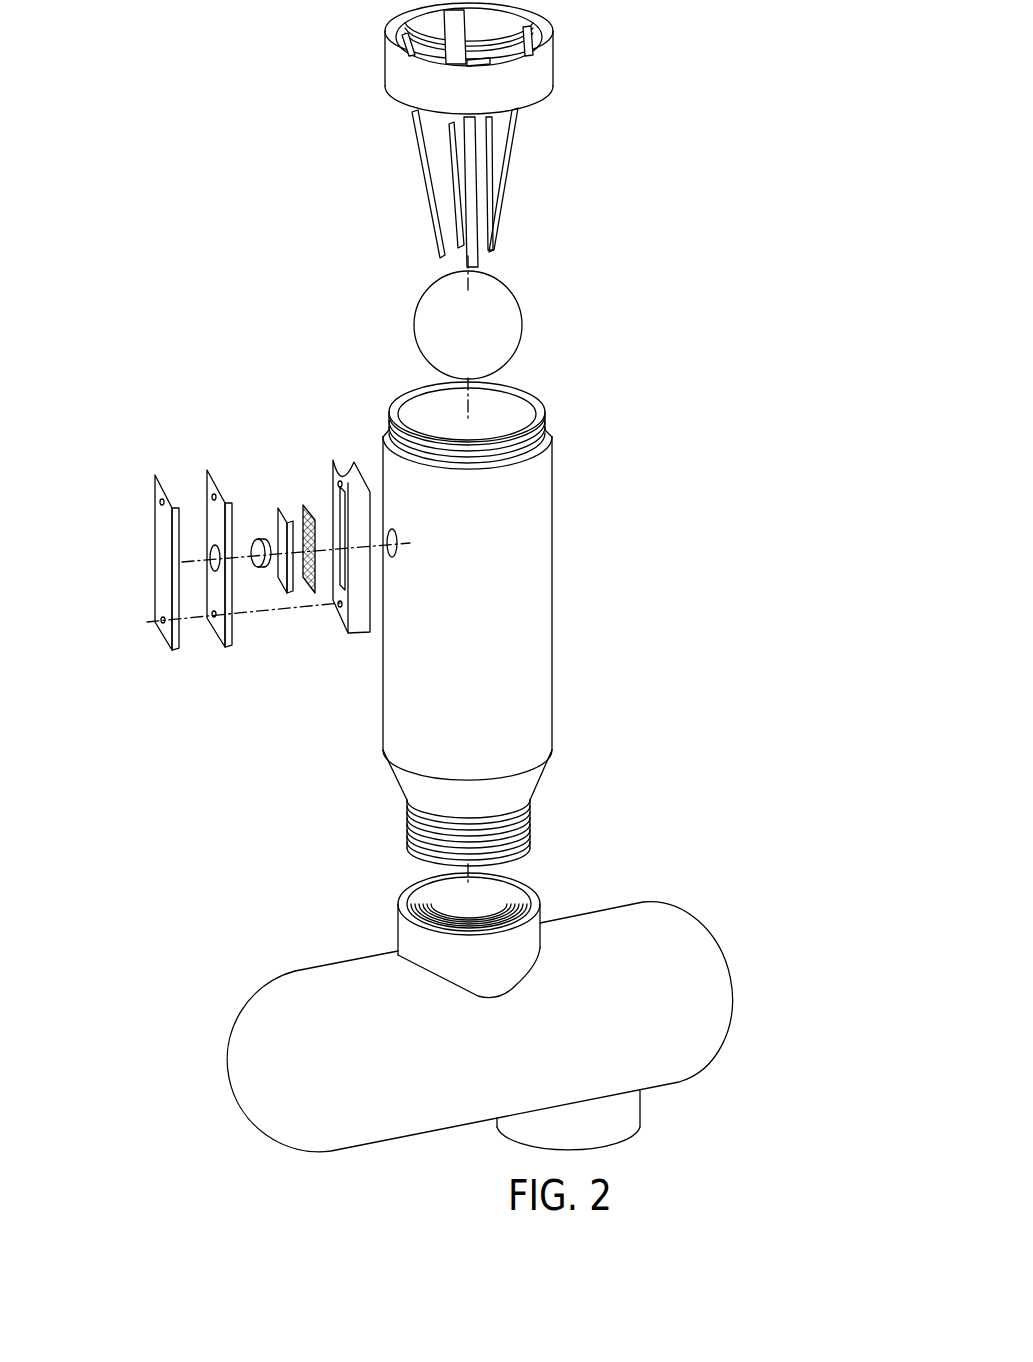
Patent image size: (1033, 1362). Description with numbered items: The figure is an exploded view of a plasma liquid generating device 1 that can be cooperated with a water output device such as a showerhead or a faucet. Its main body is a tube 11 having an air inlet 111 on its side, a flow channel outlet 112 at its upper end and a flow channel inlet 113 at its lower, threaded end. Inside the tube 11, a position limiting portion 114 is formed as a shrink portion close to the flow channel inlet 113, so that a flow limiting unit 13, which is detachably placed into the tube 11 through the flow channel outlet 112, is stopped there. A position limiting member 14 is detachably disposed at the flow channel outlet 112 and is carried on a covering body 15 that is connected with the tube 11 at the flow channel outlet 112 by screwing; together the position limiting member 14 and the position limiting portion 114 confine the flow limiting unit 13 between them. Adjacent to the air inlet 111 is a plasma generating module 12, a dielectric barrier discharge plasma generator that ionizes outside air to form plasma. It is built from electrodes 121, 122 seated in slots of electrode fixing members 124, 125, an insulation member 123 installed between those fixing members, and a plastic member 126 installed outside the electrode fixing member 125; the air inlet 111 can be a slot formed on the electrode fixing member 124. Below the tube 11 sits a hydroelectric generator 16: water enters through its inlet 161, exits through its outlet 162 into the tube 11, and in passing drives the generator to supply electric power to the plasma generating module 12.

The plasma liquid generating device 1 is at (203, 66).
The tube 11 is at (549, 515).
The air inlet 111 is at (400, 543).
The flow channel outlet 112 is at (514, 410).
The flow channel inlet 113 is at (525, 850).
The position limiting portion 114 is at (530, 772).
The plasma generating module 12 is at (280, 408).
The electrode 121 is at (305, 505).
The electrode 122 is at (258, 539).
The insulation member 123 is at (283, 508).
The electrode fixing member 124 is at (343, 465).
The electrode fixing member 125 is at (210, 470).
The plastic member 126 is at (157, 475).
The flow limiting unit 13 is at (510, 330).
The position limiting member 14 is at (513, 136).
The covering body 15 is at (535, 78).
The hydroelectric generator 16 is at (287, 975).
The inlet 161 is at (628, 1113).
The outlet 162 is at (420, 887).